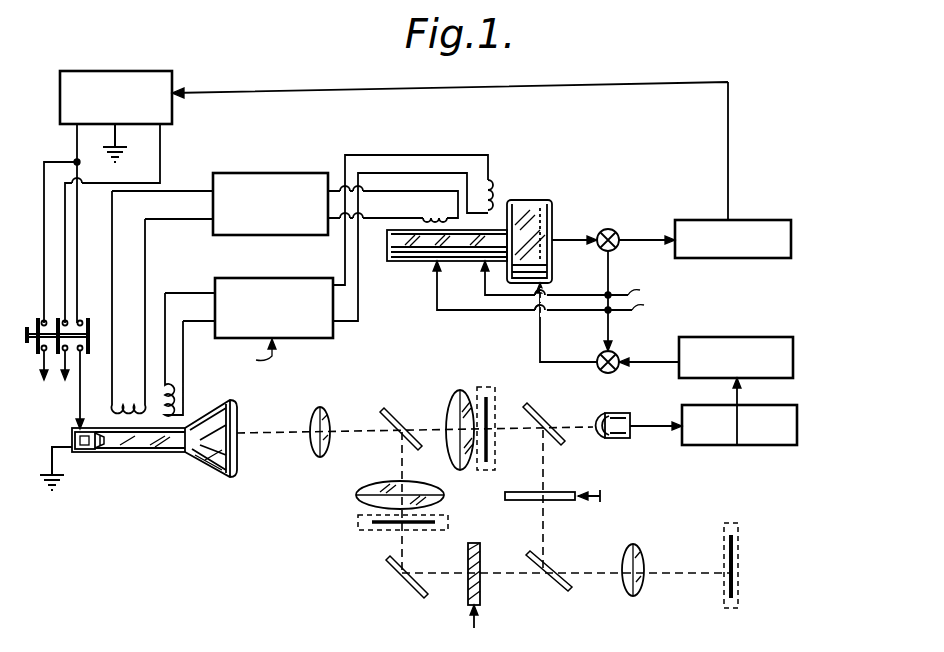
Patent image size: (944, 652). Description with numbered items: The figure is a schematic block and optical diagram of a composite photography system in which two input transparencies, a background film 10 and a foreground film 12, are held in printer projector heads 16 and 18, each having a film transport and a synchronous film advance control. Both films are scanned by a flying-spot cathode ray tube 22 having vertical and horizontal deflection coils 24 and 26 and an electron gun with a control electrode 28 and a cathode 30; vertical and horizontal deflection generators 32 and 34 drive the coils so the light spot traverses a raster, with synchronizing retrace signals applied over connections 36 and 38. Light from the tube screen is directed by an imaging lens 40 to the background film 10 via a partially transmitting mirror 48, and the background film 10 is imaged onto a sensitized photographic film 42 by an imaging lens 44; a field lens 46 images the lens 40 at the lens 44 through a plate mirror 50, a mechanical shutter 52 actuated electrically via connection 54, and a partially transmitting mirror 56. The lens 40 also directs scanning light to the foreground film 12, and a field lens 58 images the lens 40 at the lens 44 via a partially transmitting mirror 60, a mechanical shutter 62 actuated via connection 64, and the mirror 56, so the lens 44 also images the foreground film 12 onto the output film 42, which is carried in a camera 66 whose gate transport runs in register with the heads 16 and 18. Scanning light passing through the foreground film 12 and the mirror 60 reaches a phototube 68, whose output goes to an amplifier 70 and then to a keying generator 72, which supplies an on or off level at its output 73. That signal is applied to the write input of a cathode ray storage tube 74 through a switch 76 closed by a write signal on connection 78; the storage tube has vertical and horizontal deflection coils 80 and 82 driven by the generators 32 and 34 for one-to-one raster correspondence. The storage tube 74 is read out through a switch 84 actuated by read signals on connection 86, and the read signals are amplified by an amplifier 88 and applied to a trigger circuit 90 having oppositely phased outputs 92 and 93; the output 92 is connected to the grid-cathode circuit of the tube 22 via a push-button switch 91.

The background film 10 is at (385, 527).
The foreground film 12 is at (490, 447).
The printer projector head 16 is at (448, 516).
The printer projector head 18 is at (495, 470).
The flying-spot cathode ray tube 22 is at (225, 466).
The vertical deflection coil 24 is at (172, 398).
The horizontal deflection coil 26 is at (112, 408).
The control electrode 28 is at (98, 450).
The cathode 30 is at (74, 436).
The vertical deflection generator 32 is at (308, 348).
The horizontal deflection generator 34 is at (332, 168).
The connection 36 is at (252, 353).
The connection 38 is at (270, 236).
The imaging lens 40 is at (310, 426).
The sensitized photographic film 42 is at (738, 592).
The imaging lens 44 is at (643, 585).
The field lens 46 is at (372, 486).
The partially transmitting mirror 48 is at (398, 414).
The plate mirror 50 is at (408, 588).
The mechanical shutter 52 is at (468, 561).
The connection 54 is at (477, 618).
The partially transmitting mirror 56 is at (548, 590).
The field lens 58 is at (442, 402).
The partially transmitting mirror 60 is at (546, 418).
The mechanical shutter 62 is at (560, 492).
The connection 64 is at (600, 502).
The camera 66 is at (740, 540).
The phototube 68 is at (614, 442).
The amplifier 70 is at (740, 458).
The keying generator 72 is at (790, 337).
The output 73 is at (678, 364).
The cathode ray storage tube 74 is at (424, 282).
The switch 76 is at (600, 370).
The connection 78 is at (606, 330).
The vertical deflection coil 80 is at (499, 196).
The horizontal deflection coil 82 is at (428, 212).
The switch 84 is at (636, 216).
The connection 86 is at (604, 266).
The amplifier 88 is at (786, 219).
The trigger circuit 90 is at (172, 74).
The push-button switch 91 is at (28, 328).
The output 92 is at (74, 146).
The output 93 is at (164, 147).